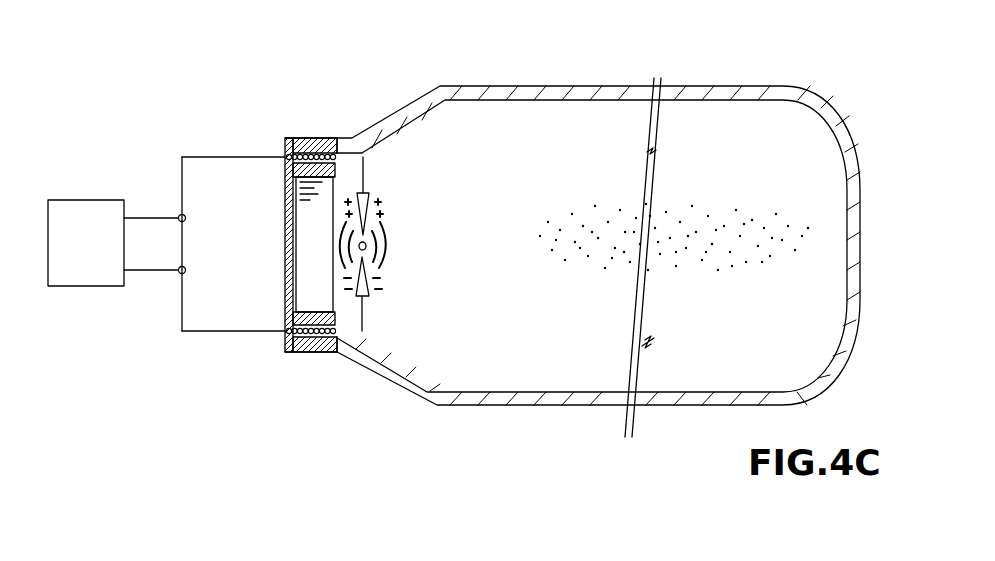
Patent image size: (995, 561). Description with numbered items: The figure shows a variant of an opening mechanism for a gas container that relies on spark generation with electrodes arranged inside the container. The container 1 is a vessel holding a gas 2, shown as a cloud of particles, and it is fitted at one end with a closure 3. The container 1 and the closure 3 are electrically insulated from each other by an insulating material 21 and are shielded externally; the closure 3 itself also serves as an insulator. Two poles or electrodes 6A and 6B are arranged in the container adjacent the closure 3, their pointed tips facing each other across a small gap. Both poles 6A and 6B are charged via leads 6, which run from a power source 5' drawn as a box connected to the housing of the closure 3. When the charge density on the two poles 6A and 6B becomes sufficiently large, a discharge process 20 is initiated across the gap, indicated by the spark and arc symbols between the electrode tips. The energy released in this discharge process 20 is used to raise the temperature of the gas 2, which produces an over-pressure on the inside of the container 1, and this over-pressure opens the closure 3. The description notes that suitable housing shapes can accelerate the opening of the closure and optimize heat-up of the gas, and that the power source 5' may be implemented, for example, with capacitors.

The container 1 is at (628, 80).
The gas 2 is at (620, 200).
The closure 3 is at (274, 258).
The power source 5' is at (86, 217).
The leads 6 is at (212, 157).
The electrode 6A is at (370, 194).
The electrode 6B is at (366, 298).
The discharge process 20 is at (384, 242).
The insulating material 21 is at (284, 156).